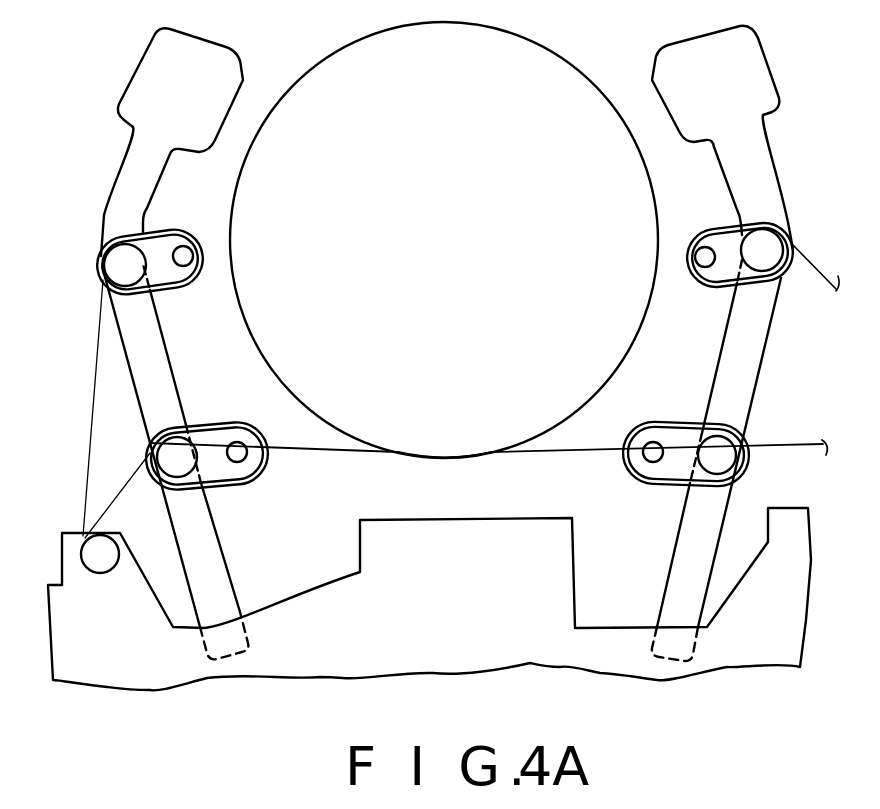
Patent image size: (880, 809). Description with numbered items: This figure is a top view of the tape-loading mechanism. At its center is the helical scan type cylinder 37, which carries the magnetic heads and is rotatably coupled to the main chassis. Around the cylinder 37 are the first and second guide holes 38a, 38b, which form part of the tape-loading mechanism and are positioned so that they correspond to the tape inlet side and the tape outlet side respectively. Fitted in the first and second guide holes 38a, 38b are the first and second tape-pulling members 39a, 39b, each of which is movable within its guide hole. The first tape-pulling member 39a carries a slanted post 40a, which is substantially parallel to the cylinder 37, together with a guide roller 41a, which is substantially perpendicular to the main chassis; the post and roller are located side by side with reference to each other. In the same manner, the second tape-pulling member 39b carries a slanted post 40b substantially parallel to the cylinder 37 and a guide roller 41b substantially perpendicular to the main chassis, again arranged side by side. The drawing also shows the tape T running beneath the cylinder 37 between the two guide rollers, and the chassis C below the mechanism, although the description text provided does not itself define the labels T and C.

The helical scan type cylinder 37 is at (579, 98).
The first guide hole 38a is at (165, 345).
The second guide hole 38b is at (747, 363).
The first tape-pulling member 39a is at (217, 482).
The second tape-pulling member 39b is at (673, 473).
The slanted post 40a is at (267, 465).
The slanted post 40b is at (638, 478).
The guide roller 41a is at (152, 453).
The guide roller 41b is at (722, 458).
The tape T is at (593, 447).
The chassis C is at (72, 658).